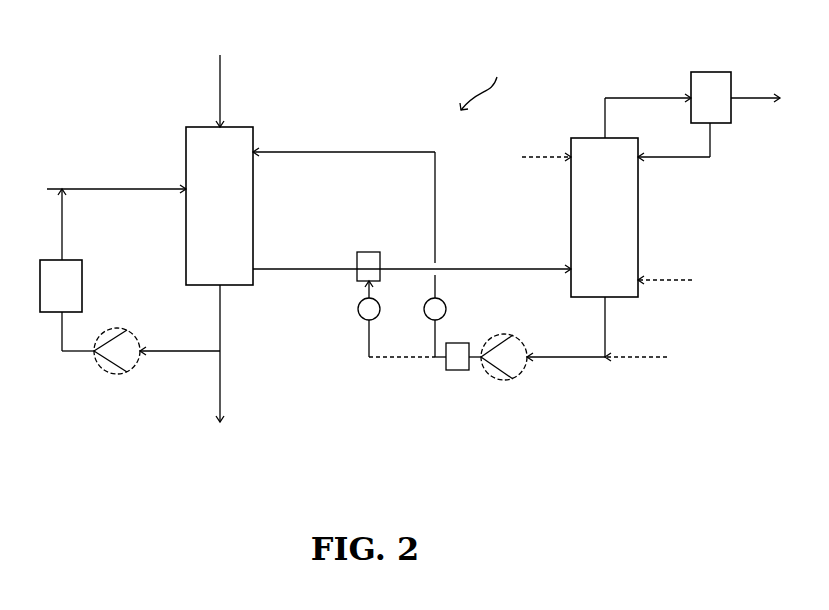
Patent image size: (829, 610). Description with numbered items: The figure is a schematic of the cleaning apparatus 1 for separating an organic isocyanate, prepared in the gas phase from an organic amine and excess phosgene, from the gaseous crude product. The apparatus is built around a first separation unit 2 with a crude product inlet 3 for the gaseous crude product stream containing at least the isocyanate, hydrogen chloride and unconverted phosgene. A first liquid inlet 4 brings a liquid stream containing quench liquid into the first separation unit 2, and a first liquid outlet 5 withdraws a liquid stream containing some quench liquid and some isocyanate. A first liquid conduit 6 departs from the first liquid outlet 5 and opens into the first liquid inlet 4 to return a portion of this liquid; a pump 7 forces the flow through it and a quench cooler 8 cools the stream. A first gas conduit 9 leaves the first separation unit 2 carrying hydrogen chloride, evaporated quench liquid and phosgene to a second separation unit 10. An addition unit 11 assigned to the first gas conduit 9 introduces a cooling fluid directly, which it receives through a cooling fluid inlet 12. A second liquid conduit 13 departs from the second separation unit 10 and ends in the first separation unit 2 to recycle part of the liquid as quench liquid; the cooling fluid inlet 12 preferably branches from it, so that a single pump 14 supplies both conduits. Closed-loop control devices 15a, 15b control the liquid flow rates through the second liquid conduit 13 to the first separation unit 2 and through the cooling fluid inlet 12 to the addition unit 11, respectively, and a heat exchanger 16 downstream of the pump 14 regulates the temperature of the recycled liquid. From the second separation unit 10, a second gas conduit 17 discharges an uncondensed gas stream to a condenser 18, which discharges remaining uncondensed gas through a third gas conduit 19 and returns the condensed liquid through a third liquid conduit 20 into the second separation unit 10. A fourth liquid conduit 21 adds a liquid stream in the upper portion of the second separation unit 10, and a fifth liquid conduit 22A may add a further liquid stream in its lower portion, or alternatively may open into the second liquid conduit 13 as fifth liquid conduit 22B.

The cleaning apparatus 1 is at (480, 86).
The first separation unit 2 is at (219, 206).
The crude product inlet 3 is at (225, 91).
The first liquid inlet 4 is at (116, 216).
The first liquid outlet 5 is at (225, 353).
The first liquid conduit 6 is at (180, 344).
The pump 7 is at (101, 343).
The quench cooler 8 is at (61, 286).
The first gas conduit 9 is at (412, 262).
The second separation unit 10 is at (604, 217).
The addition unit 11 is at (368, 266).
The cooling fluid inlet 12 is at (389, 350).
The second liquid conduit 13 is at (438, 244).
The pump 14 is at (543, 357).
The closed-loop control device 15a is at (448, 309).
The closed-loop control device 15b is at (380, 319).
The heat exchanger 16 is at (463, 356).
The second gas conduit 17 is at (648, 108).
The condenser 18 is at (711, 97).
The third gas conduit 19 is at (755, 90).
The third liquid conduit 20 is at (674, 142).
The fourth liquid conduit 21 is at (546, 148).
The fifth liquid conduit 22A is at (665, 272).
The fifth liquid conduit 22B is at (636, 349).